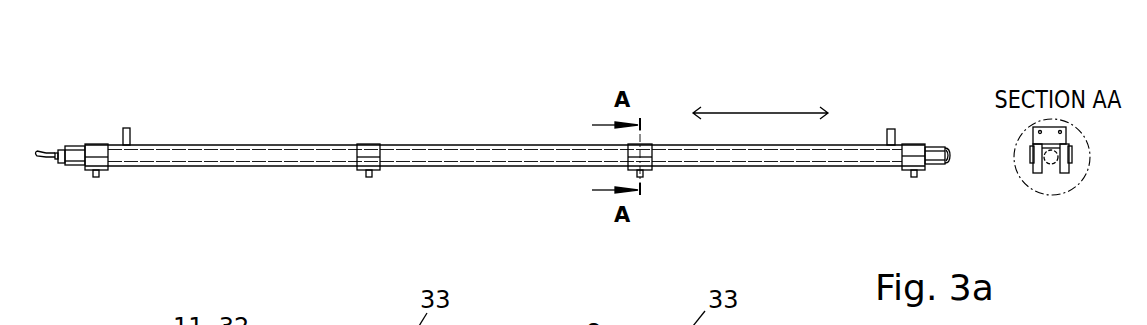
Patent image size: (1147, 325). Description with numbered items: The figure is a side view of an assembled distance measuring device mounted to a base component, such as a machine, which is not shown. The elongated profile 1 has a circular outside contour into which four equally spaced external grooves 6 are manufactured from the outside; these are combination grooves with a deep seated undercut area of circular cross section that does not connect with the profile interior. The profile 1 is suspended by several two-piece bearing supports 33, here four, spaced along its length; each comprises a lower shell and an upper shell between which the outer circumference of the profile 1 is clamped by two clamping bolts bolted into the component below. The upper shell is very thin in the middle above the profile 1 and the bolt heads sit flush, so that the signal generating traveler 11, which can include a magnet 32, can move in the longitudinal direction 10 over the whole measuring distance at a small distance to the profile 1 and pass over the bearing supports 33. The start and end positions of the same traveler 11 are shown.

The profile 1 is at (483, 155).
The external grooves 6 is at (413, 162).
The longitudinal direction 10 is at (735, 113).
The traveler 11 is at (509, 101).
The magnet 32 is at (130, 128).
The bearing supports 33 is at (110, 192).